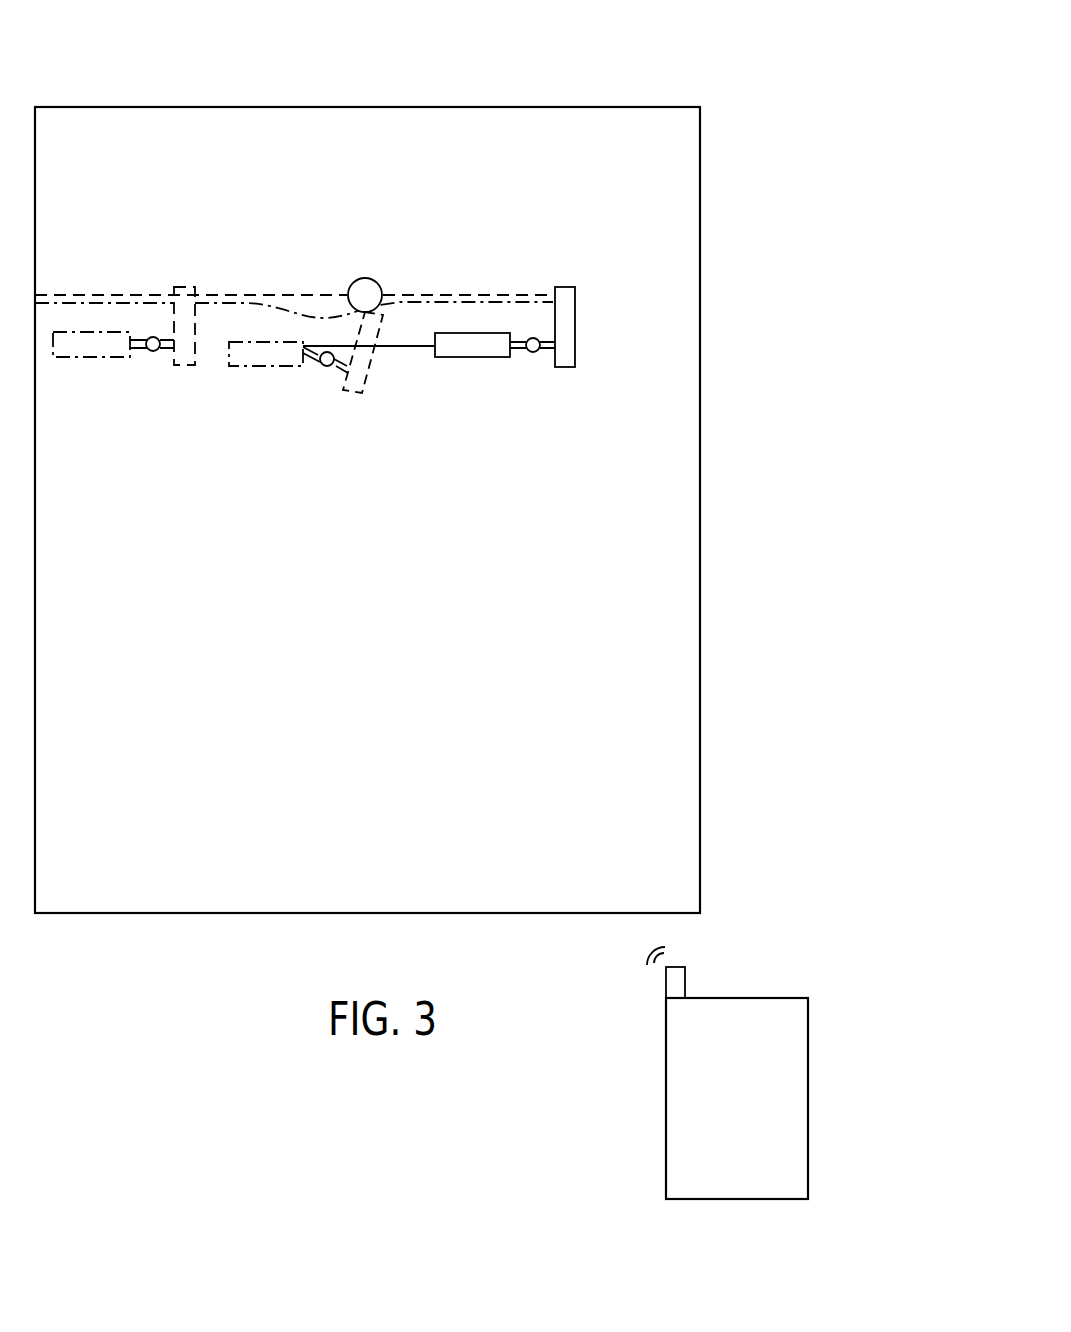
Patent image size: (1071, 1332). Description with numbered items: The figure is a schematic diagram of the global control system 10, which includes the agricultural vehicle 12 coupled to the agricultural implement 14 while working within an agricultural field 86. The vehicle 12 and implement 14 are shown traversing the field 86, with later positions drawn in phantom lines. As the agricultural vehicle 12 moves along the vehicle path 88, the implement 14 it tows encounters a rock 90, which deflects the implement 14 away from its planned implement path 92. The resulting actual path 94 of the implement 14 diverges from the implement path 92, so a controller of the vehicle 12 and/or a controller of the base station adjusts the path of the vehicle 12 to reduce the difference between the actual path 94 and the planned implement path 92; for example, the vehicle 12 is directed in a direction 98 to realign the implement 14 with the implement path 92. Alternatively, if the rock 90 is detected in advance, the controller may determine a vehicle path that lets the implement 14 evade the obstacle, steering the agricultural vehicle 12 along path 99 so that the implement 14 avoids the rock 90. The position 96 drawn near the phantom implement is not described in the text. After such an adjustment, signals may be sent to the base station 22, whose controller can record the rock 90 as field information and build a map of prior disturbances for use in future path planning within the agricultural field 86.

The global control system 10 is at (712, 46).
The agricultural vehicle 12 is at (473, 358).
The agricultural implement 14 is at (578, 324).
The base station 22 is at (666, 1100).
The agricultural field 86 is at (700, 697).
The vehicle path 88 is at (403, 347).
The rock 90 is at (355, 282).
The implement path 92 is at (465, 295).
The actual path 94 is at (388, 309).
The end position 96 is at (205, 343).
The direction 98 is at (232, 391).
The path 99 is at (384, 362).